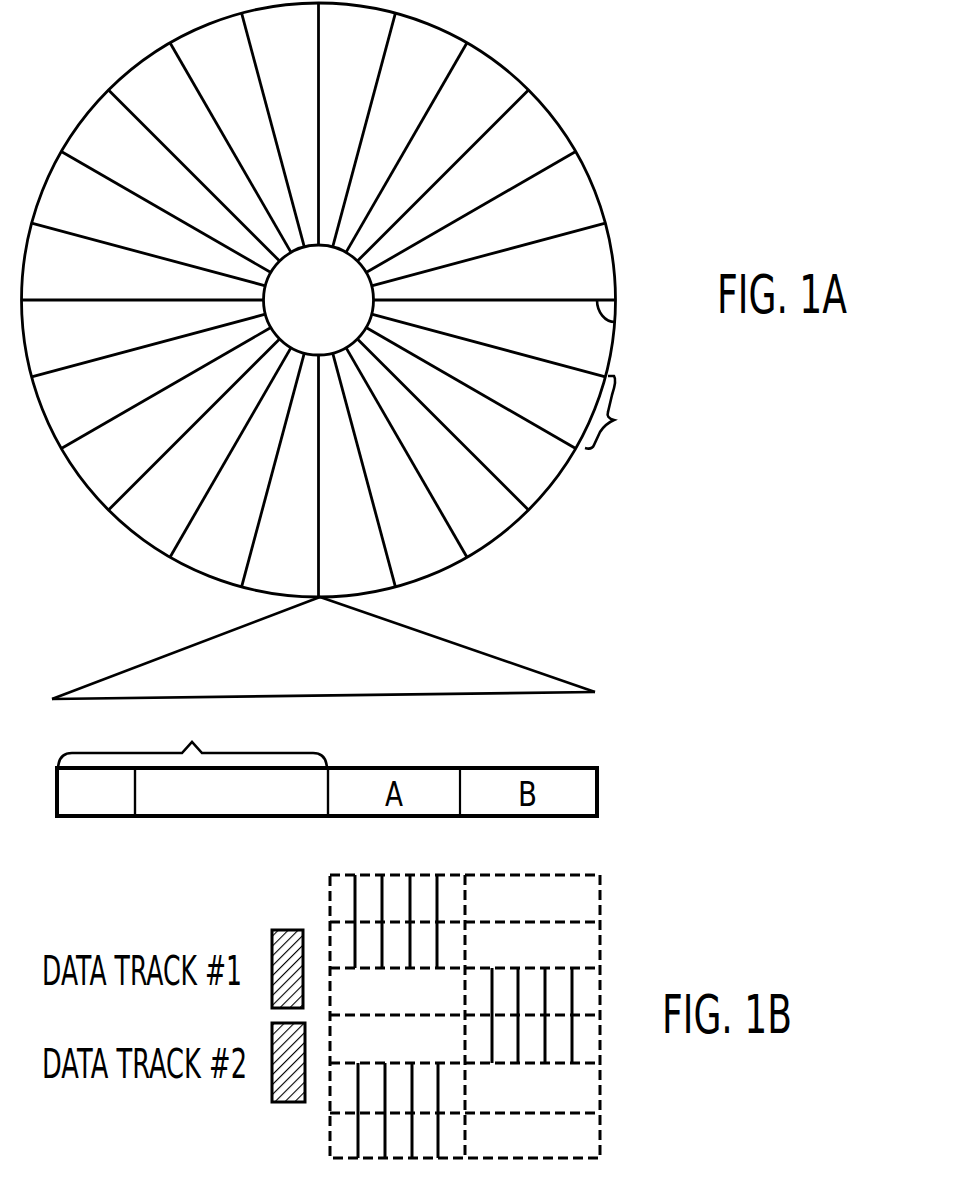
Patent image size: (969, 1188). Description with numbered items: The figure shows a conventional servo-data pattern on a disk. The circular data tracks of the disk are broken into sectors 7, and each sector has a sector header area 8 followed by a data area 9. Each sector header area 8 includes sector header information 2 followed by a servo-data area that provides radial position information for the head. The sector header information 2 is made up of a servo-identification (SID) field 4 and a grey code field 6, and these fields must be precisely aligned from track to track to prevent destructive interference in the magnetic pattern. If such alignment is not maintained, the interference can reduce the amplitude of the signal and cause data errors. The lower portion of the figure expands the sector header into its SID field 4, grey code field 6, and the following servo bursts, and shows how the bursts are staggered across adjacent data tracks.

The sector header information 2 is at (192, 737).
The servo-identification (SID) field 4 is at (98, 822).
The grey code field 6 is at (230, 822).
The sector 7 is at (613, 412).
The sector header area 8 is at (615, 322).
The data area 9 is at (592, 269).